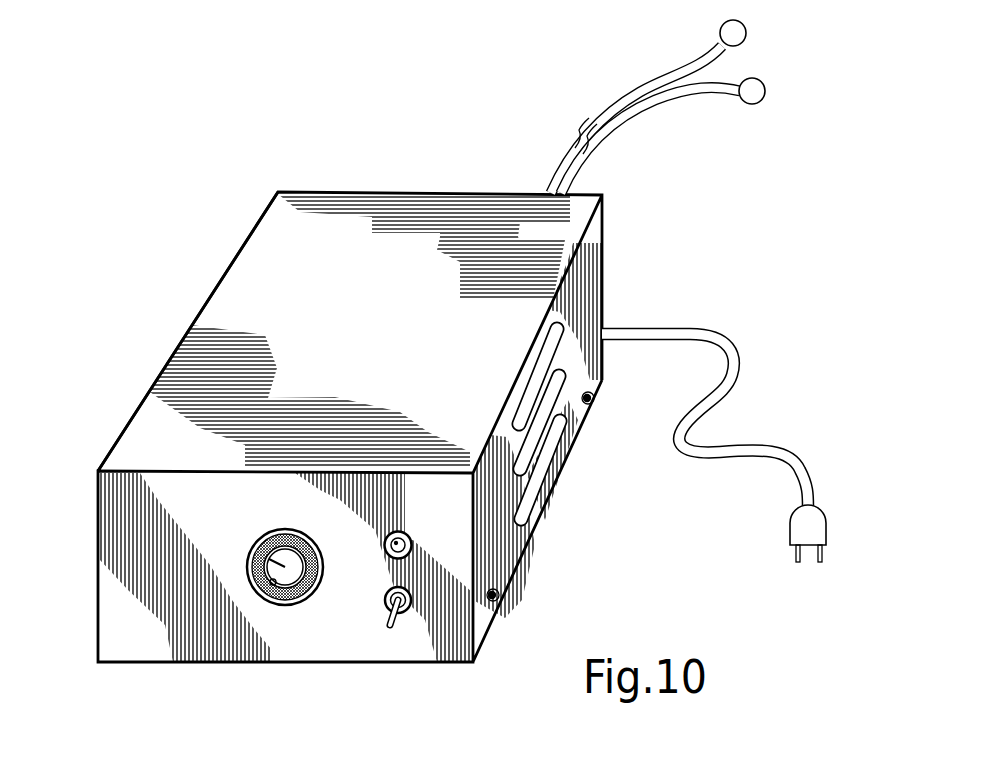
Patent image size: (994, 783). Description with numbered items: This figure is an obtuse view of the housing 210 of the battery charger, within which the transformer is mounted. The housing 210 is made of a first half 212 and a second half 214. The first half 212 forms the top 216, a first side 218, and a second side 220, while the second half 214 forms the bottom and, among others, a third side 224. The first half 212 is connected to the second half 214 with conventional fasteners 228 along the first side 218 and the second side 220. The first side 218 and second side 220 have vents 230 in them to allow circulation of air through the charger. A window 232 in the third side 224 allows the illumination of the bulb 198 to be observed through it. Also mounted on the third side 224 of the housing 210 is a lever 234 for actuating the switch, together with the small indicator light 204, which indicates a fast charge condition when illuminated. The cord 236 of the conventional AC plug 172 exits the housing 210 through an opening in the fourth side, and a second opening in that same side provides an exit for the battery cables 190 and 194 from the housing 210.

The AC plug 172 is at (792, 533).
The battery cable 190 is at (716, 52).
The battery cable 194 is at (737, 93).
The bulb 198 is at (250, 557).
The indicator light 204 is at (399, 532).
The housing 210 is at (232, 297).
The first half 212 is at (362, 212).
The second half 214 is at (345, 650).
The top 216 is at (520, 238).
The first side 218 is at (498, 548).
The second side 220 is at (123, 430).
The third side 224 is at (140, 640).
The fasteners 228 is at (593, 400).
The vents 230 is at (553, 473).
The window 232 is at (263, 602).
The lever 234 is at (395, 634).
The cord 236 is at (717, 340).